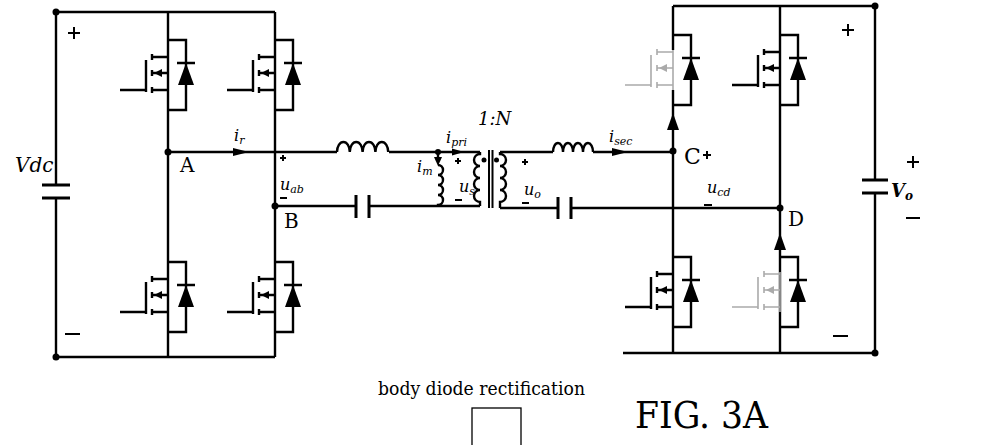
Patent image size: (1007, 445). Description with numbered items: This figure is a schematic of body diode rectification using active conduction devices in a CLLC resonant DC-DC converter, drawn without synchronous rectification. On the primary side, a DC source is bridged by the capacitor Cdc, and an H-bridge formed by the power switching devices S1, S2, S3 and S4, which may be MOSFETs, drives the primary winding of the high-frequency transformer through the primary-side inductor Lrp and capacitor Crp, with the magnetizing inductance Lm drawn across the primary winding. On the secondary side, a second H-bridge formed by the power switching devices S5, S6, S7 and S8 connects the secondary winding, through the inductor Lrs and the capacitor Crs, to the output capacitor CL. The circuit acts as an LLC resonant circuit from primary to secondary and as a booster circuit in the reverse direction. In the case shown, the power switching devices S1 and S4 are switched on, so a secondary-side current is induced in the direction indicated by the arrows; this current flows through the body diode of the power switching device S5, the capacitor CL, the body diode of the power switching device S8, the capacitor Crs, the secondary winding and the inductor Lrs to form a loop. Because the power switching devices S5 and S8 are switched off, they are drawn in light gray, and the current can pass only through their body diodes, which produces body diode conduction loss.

The power switching device S1 is at (157, 73).
The power switching device S2 is at (157, 297).
The power switching device S3 is at (264, 73).
The power switching device S4 is at (264, 297).
The power switching device S5 is at (662, 69).
The power switching device S6 is at (662, 291).
The power switching device S7 is at (769, 69).
The power switching device S8 is at (769, 291).
The DC link capacitor Cdc is at (73, 188).
The capacitor CL is at (867, 200).
The primary resonant inductor Lrp is at (362, 135).
The primary resonant capacitor Crp is at (373, 220).
The magnetizing inductance Lm is at (427, 177).
The inductor Lrs is at (573, 134).
The capacitor Crs is at (568, 221).